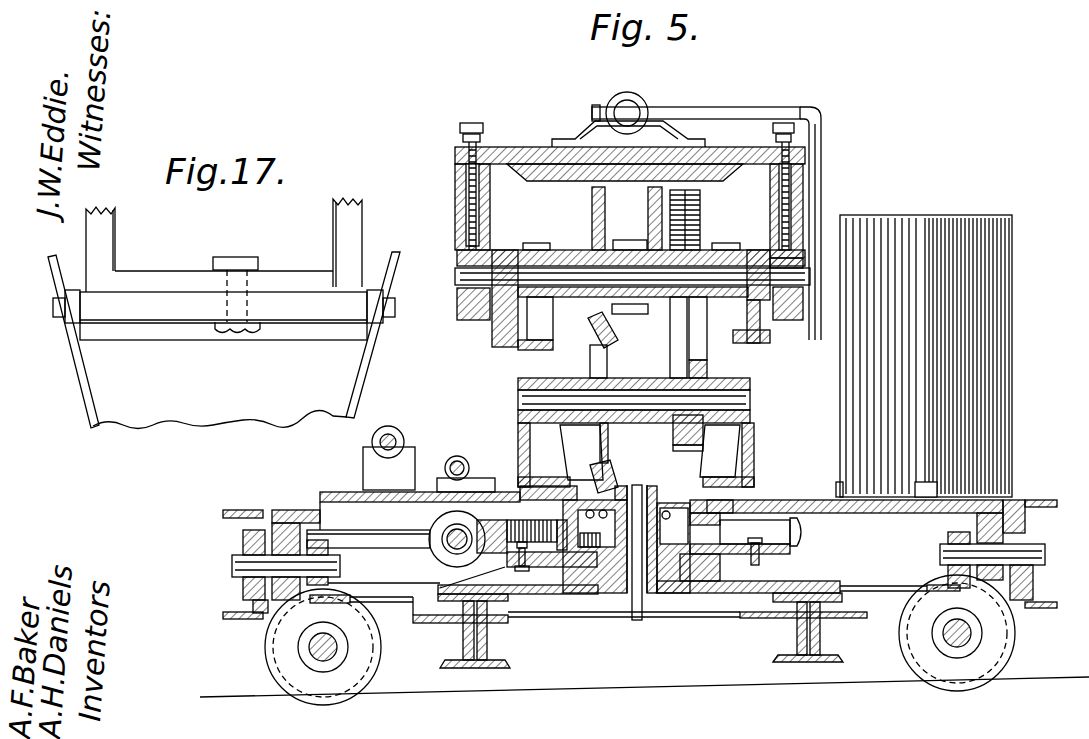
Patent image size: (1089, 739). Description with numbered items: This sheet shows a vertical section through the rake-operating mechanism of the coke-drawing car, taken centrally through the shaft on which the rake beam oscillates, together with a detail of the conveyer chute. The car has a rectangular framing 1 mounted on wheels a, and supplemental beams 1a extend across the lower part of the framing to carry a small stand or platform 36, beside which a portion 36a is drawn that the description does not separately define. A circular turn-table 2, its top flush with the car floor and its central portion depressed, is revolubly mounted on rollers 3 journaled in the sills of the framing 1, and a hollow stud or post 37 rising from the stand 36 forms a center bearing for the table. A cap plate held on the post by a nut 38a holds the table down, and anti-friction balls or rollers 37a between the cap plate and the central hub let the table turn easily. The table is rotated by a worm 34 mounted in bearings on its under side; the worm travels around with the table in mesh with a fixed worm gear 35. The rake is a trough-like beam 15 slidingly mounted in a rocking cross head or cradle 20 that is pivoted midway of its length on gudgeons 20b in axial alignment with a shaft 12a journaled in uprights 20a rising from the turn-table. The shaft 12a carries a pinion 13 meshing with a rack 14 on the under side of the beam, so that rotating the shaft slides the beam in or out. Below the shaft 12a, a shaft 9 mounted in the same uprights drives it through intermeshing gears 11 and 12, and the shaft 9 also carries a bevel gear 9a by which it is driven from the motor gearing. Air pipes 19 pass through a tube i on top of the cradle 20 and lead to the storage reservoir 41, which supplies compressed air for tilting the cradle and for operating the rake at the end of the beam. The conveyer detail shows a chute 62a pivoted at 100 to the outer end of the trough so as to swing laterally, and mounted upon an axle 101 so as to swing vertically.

In FIG. 5, the car framing 1 is at (248, 501).
In FIG. 5, the supplemental beams 1a is at (490, 633).
In FIG. 5, the turn-table 2 is at (291, 508).
In FIG. 5, the rollers 3 is at (243, 541).
In FIG. 5, the shaft 9 is at (640, 392).
In FIG. 5, the bevel gear 9a is at (598, 456).
In FIG. 5, the gear 11 is at (672, 438).
In FIG. 5, the gear 12 is at (700, 222).
In FIG. 5, the shaft 12a is at (586, 323).
In FIG. 5, the pinion 13 is at (626, 314).
In FIG. 5, the rack 14 is at (627, 240).
In FIG. 5, the rake beam 15 is at (591, 221).
In FIG. 5, the air pipes 19 is at (821, 141).
In FIG. 5, the cradle 20 is at (455, 217).
In FIG. 5, the uprights 20a is at (766, 448).
In FIG. 5, the gudgeons 20b is at (808, 292).
In FIG. 17, the gudgeons 20b is at (250, 305).
In FIG. 5, the worm 34 is at (441, 557).
In FIG. 5, the worm gear 35 is at (799, 543).
In FIG. 5, the stand 36 is at (674, 594).
In FIG. 5, the housing arm 36a is at (718, 507).
In FIG. 5, the post 37 is at (626, 600).
In FIG. 5, the anti-friction balls 37a is at (520, 468).
In FIG. 5, the nut 38a is at (636, 488).
In FIG. 5, the air reservoir 41 is at (858, 386).
In FIG. 5, the wheels a is at (277, 660).
In FIG. 5, the tube i is at (615, 104).
In FIG. 17, the pivot 100 is at (238, 277).
In FIG. 17, the axle 101 is at (60, 318).
In FIG. 17, the chute 62a is at (182, 406).